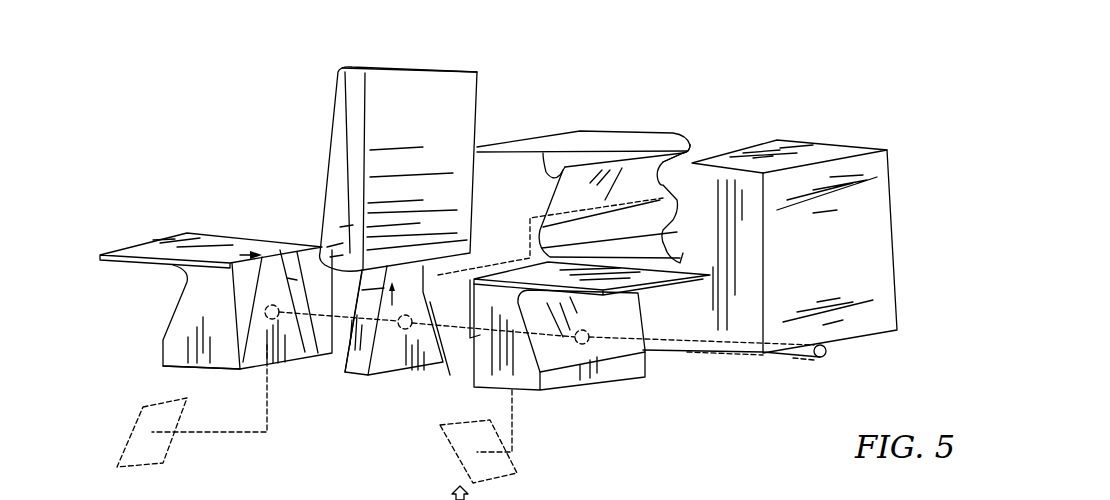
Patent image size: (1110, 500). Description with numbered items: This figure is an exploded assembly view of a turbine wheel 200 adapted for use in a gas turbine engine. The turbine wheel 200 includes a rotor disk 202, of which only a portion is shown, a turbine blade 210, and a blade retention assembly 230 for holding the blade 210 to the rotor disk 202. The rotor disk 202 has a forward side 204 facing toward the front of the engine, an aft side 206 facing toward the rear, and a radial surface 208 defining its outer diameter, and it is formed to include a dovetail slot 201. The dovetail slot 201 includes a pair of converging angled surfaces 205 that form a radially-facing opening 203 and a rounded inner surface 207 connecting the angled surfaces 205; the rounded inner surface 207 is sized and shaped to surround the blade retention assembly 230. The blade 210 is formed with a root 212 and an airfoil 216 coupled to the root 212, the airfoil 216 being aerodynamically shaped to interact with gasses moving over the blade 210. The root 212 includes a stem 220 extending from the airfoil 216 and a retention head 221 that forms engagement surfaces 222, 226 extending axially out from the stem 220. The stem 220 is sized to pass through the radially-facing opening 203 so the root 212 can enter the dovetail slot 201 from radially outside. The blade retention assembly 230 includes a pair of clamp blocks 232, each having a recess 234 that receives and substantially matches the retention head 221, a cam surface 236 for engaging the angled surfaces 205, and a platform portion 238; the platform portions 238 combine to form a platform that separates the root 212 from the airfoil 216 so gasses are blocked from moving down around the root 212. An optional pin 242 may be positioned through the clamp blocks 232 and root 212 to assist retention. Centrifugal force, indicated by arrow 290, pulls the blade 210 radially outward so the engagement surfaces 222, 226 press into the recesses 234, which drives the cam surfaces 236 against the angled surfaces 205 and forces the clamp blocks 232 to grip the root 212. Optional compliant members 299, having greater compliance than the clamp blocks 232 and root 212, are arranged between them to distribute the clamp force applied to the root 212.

The turbine wheel 200 is at (880, 117).
The dovetail slot 201 is at (546, 192).
The rotor disk 202 is at (913, 237).
The radially-facing opening 203 is at (738, 140).
The forward side 204 is at (752, 238).
The angled surfaces 205 is at (560, 168).
The aft side 206 is at (897, 303).
The rounded inner surface 207 is at (620, 253).
The radial surface 208 is at (823, 155).
The turbine blade 210 is at (285, 95).
The root 212 is at (305, 432).
The airfoil 216 is at (325, 165).
The stem 220 is at (373, 373).
The retention head 221 is at (320, 362).
The engagement surface 222 is at (343, 363).
The engagement surface 226 is at (430, 303).
The blade retention assembly 230 is at (167, 284).
The clamp block 232 is at (167, 346).
The recess 234 is at (276, 285).
The cam surface 236 is at (170, 314).
The platform portion 238 is at (143, 247).
The pin 242 is at (792, 362).
The arrow 290 is at (443, 499).
The compliant member 299 is at (150, 468).